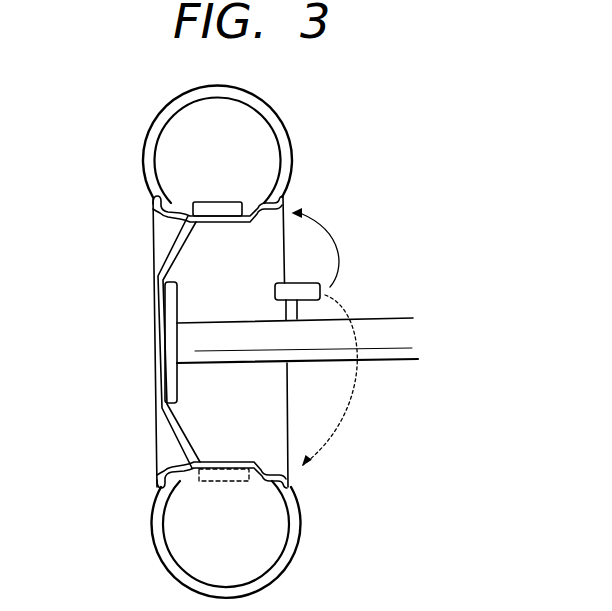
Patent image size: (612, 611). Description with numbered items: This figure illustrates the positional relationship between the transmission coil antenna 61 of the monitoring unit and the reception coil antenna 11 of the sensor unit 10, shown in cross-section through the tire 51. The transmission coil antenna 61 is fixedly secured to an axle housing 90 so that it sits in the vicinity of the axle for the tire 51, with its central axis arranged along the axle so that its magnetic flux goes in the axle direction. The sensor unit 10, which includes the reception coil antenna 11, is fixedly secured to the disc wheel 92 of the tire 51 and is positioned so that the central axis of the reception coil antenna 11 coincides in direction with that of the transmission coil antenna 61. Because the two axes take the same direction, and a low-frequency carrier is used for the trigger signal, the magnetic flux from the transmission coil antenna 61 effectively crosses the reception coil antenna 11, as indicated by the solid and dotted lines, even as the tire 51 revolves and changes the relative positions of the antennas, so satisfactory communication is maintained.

The tire 51 is at (275, 118).
The sensor unit 10 is at (282, 187).
The reception coil antenna 11 is at (232, 203).
The transmission coil antenna 61 is at (296, 283).
The disc wheel 92 is at (153, 343).
The axle housing 90 is at (407, 361).